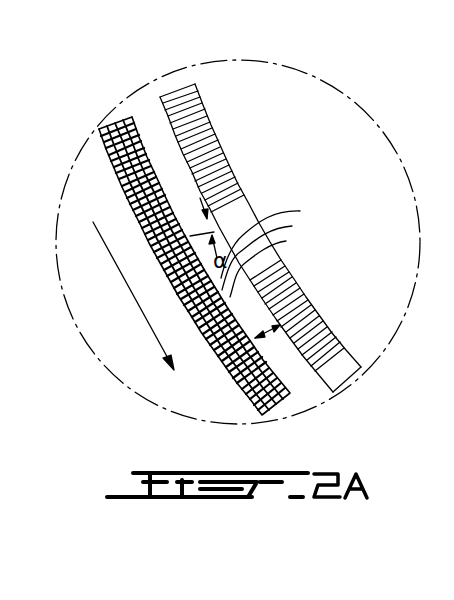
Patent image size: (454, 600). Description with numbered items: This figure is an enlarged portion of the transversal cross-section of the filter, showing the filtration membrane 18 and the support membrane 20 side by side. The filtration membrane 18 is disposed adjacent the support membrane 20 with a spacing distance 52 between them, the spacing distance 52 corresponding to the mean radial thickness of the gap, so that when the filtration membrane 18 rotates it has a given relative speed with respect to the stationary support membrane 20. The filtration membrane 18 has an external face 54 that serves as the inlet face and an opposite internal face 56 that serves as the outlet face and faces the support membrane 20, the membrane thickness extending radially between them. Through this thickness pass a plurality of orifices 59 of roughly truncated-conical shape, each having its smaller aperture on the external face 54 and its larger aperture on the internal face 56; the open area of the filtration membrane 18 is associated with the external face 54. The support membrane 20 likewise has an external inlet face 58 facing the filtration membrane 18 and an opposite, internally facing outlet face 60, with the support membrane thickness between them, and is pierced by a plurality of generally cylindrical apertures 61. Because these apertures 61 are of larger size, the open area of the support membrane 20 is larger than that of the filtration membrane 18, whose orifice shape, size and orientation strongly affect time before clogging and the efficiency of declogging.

The filtration membrane 18 is at (224, 371).
The support membrane 20 is at (227, 168).
The spacing distance 52 is at (268, 333).
The external face 54 is at (120, 168).
The internal face 56 is at (136, 141).
The external inlet face 58 is at (317, 362).
The orifices 59 is at (274, 247).
The outlet face 60 is at (296, 280).
The apertures 61 is at (178, 80).